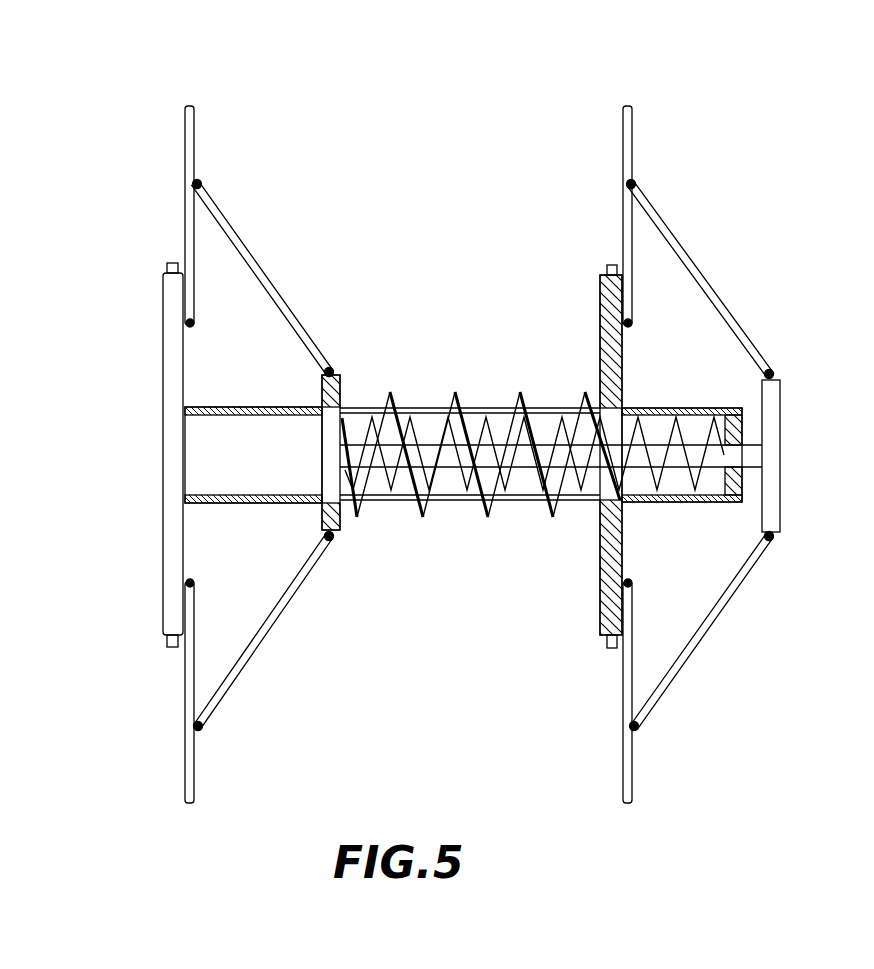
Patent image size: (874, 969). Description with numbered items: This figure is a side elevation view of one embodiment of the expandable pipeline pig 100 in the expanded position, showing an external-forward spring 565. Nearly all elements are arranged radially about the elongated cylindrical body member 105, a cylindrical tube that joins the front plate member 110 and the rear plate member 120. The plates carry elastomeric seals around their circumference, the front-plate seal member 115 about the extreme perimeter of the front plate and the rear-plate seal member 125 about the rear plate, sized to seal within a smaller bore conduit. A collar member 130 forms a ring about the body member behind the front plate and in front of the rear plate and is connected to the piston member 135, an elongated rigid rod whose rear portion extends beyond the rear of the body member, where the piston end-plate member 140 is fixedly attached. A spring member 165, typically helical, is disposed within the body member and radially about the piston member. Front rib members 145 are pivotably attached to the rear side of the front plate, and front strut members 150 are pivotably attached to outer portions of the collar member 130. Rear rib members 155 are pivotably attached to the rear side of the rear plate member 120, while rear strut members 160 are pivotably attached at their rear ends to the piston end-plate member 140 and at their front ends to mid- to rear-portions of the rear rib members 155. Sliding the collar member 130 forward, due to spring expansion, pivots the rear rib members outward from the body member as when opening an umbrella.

The expandable pipeline pig 100 is at (328, 104).
The elongated cylindrical body member 105 is at (480, 398).
The front plate member 110 is at (163, 578).
The front-plate seal member 115 is at (167, 265).
The rear plate member 120 is at (600, 632).
The rear-plate seal member 125 is at (610, 648).
The collar member 130 is at (337, 378).
The piston member 135 is at (760, 482).
The piston end-plate member 140 is at (782, 480).
The front rib members 145 is at (185, 145).
The front strut members 150 is at (232, 221).
The rear rib members 155 is at (633, 125).
The rear strut members 160 is at (727, 303).
The spring member 165 is at (627, 474).
The external-forward spring 565 is at (483, 513).